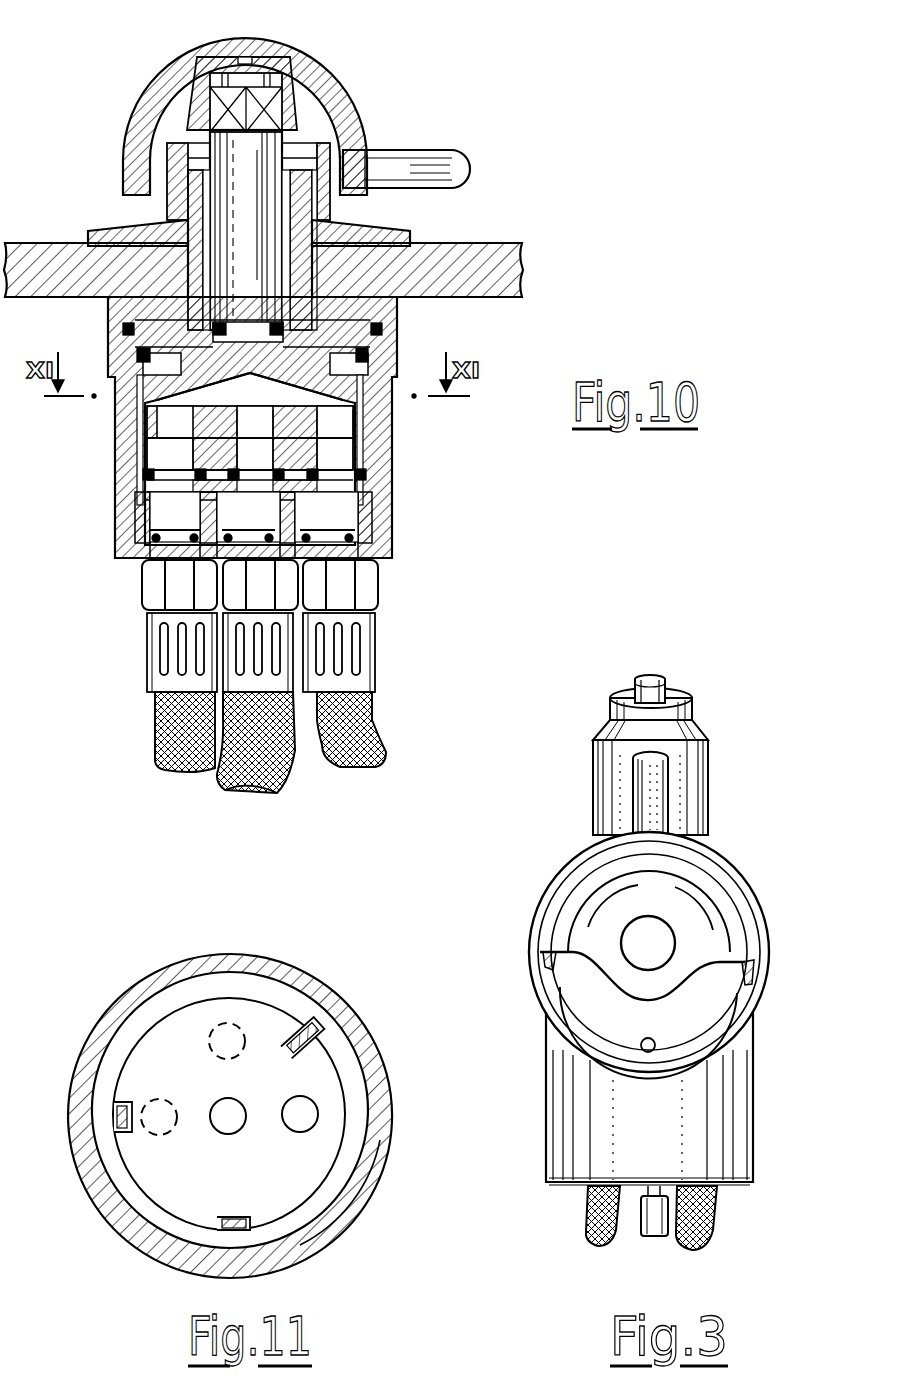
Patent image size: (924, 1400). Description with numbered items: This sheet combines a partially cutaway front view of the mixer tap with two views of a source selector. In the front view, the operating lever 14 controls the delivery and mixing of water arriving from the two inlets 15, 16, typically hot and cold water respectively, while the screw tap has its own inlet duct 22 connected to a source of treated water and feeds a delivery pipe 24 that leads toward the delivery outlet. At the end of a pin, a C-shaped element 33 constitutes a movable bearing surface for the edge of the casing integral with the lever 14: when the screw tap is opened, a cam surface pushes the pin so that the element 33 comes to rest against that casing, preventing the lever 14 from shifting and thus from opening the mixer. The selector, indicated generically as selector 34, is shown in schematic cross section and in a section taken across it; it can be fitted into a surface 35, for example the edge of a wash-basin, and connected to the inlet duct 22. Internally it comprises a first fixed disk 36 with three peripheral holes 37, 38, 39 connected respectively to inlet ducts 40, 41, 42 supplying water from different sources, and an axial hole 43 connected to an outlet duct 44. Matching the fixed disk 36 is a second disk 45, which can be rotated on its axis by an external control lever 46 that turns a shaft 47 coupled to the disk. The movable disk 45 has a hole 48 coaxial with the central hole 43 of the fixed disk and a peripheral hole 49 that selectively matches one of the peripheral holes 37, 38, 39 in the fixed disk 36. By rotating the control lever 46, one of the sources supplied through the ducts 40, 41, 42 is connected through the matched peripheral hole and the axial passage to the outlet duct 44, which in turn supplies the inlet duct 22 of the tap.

In FIG. 10, the selector 34 is at (350, 62).
In FIG. 10, the surface 35 is at (470, 258).
In FIG. 10, the first fixed disk 36 is at (365, 455).
In FIG. 10, the peripheral hole 37 is at (166, 450).
In FIG. 11, the peripheral hole 37 is at (153, 1098).
In FIG. 11, the peripheral hole 38 is at (228, 1020).
In FIG. 10, the peripheral hole 39 is at (330, 462).
In FIG. 11, the peripheral hole 39 is at (313, 1110).
In FIG. 10, the inlet duct 40 is at (160, 716).
In FIG. 10, the inlet duct 41 is at (233, 787).
In FIG. 10, the inlet duct 42 is at (370, 712).
In FIG. 10, the axial hole 43 is at (245, 452).
In FIG. 11, the axial hole 43 is at (217, 1110).
In FIG. 10, the outlet duct 44 is at (263, 766).
In FIG. 10, the second disk 45 is at (363, 421).
In FIG. 10, the external control lever 46 is at (455, 152).
In FIG. 10, the shaft 47 is at (228, 163).
In FIG. 10, the hole 48 is at (253, 408).
In FIG. 10, the peripheral hole 49 is at (325, 412).
In FIG. 3, the delivery pipe 24 is at (680, 710).
In FIG. 3, the operating lever 14 is at (660, 798).
In FIG. 3, the C-shaped element 33 is at (715, 1022).
In FIG. 3, the inlet 16 is at (590, 1218).
In FIG. 3, the inlet duct 22 is at (641, 1222).
In FIG. 3, the inlet 15 is at (716, 1212).